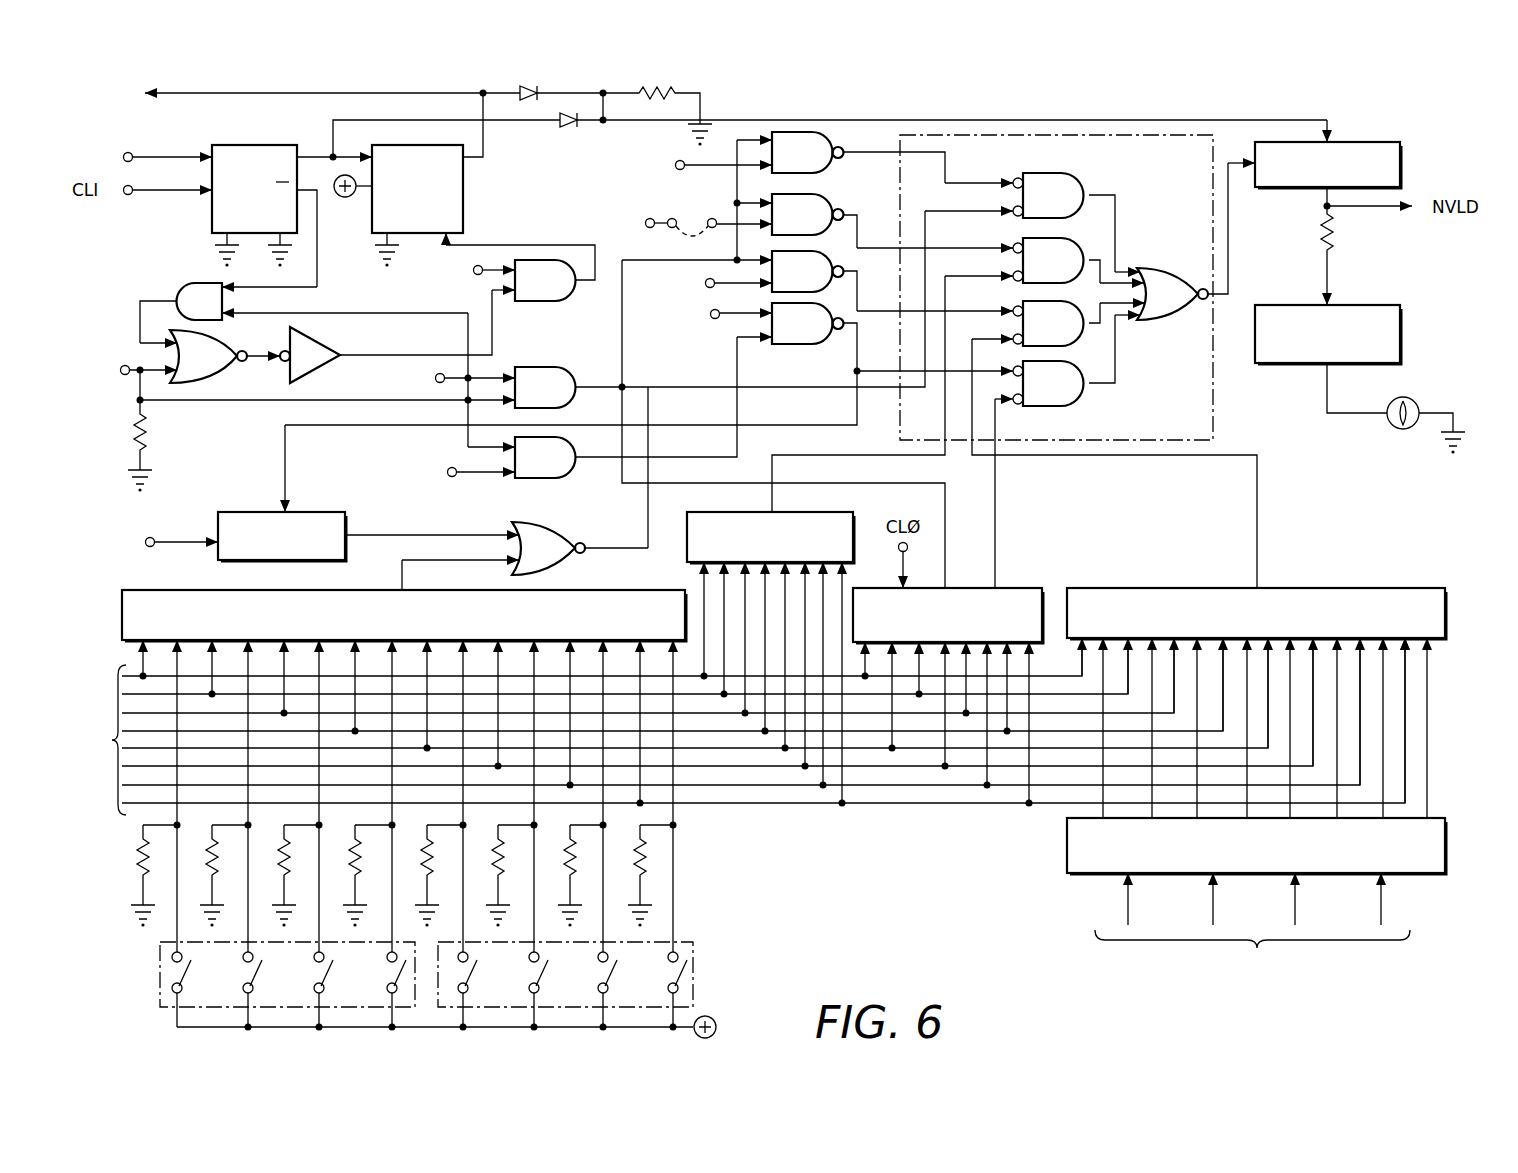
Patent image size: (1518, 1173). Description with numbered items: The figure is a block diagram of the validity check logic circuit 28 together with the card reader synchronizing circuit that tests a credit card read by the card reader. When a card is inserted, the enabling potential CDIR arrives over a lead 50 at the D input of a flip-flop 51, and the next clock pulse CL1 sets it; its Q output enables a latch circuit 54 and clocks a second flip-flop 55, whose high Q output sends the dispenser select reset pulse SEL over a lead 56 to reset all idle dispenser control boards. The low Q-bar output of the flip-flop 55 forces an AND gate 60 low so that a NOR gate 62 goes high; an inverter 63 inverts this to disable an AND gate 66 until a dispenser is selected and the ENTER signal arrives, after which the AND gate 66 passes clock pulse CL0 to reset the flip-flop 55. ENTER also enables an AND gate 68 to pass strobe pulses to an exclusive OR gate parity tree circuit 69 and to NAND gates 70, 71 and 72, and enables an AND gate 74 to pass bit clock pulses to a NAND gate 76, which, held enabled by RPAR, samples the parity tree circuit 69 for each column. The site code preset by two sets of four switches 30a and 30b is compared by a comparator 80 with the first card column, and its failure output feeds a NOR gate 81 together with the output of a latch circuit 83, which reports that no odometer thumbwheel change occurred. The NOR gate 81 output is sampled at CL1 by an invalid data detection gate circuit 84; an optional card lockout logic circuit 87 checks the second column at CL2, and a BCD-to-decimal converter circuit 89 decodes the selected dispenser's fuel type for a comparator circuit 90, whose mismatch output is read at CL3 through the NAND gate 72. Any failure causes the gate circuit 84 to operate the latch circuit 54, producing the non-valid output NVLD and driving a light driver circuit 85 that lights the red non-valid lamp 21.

The non-valid lamp 21 is at (1415, 398).
The validity check logic circuit 28 is at (866, 870).
The set of four switches 30a is at (160, 948).
The set of four switches 30b is at (693, 948).
The lead 50 is at (185, 157).
The flip-flop 51 is at (278, 145).
The latch circuit 54 is at (1370, 142).
The second flip-flop 55 is at (463, 180).
The lead 56 is at (228, 100).
The AND gate 60 is at (190, 283).
The NOR gate 62 is at (212, 383).
The inverter 63 is at (322, 378).
The AND gate 66 is at (543, 301).
The AND gate 68 is at (548, 367).
The exclusive OR gate parity tree circuit 69 is at (1024, 588).
The NAND gate 70 is at (826, 133).
The NAND gate 71 is at (826, 194).
The NAND gate 72 is at (826, 251).
The AND gate 74 is at (546, 478).
The NAND gate 76 is at (812, 344).
The comparator 80 is at (166, 590).
The NOR gate 81 is at (546, 522).
The latch circuit 83 is at (307, 512).
The invalid data detection gate circuit 84 is at (1200, 432).
The light driver circuit 85 is at (1370, 305).
The card lockout logic circuit 87 is at (822, 512).
The BCD-to-decimal converter circuit 89 is at (1067, 855).
The comparator circuit 90 is at (1410, 588).